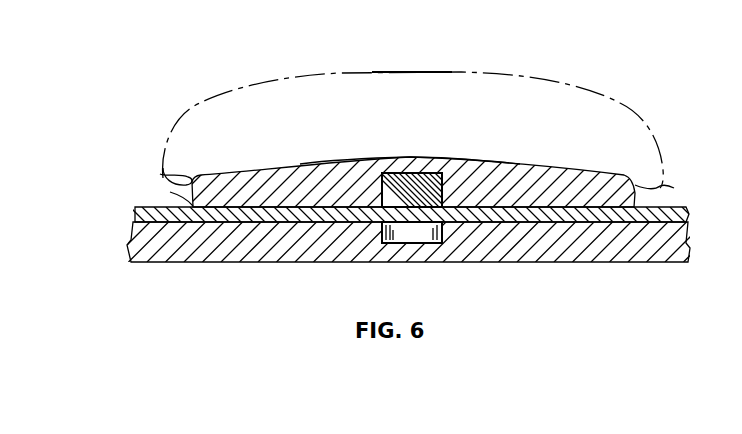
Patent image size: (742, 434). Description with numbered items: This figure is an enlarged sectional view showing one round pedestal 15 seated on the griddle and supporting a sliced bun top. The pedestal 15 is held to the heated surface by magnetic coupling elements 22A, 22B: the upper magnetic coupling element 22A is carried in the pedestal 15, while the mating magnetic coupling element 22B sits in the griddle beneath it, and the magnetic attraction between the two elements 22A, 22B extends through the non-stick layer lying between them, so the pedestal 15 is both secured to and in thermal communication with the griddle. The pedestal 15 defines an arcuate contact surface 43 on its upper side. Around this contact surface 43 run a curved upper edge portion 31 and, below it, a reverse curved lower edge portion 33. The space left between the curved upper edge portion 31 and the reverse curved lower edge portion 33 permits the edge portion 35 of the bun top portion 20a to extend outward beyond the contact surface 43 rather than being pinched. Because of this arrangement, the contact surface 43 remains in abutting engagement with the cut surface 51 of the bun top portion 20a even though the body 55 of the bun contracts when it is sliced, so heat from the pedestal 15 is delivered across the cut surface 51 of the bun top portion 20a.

The pedestal 15 is at (276, 160).
The cut surface 51 is at (345, 159).
The arcuate contact surface 43 is at (461, 158).
The magnetic coupling element 22A is at (411, 185).
The magnetic coupling element 22B is at (398, 239).
The body 55 is at (478, 76).
The bun top portion 20a is at (402, 72).
The curved upper edge portion 31 is at (188, 177).
The reverse curved lower edge portion 33 is at (178, 198).
The edge portion 35 is at (672, 189).